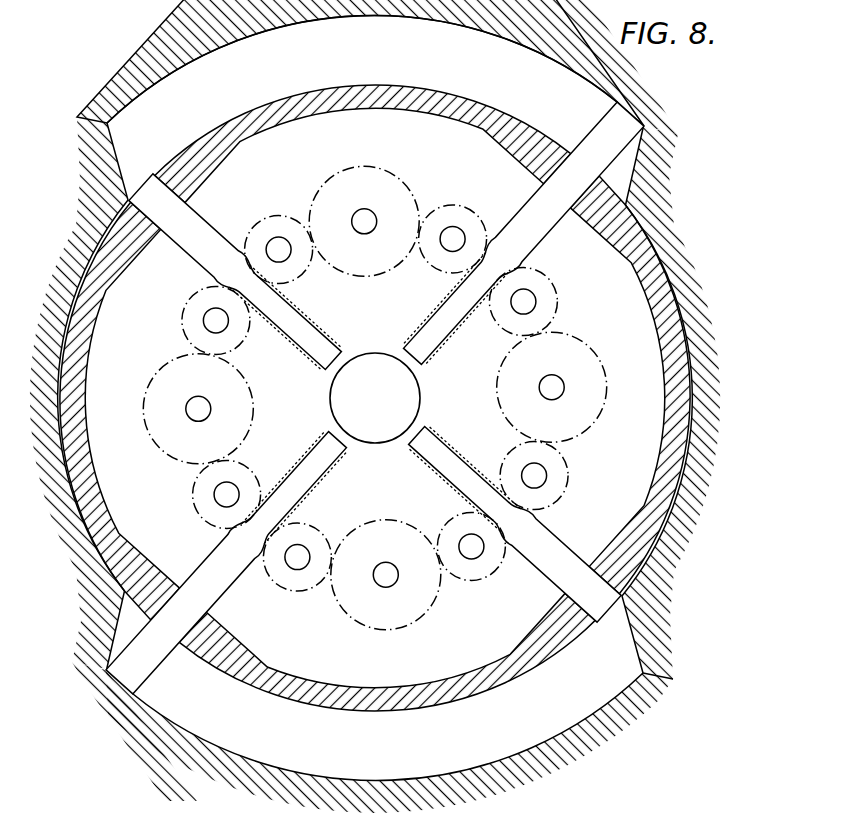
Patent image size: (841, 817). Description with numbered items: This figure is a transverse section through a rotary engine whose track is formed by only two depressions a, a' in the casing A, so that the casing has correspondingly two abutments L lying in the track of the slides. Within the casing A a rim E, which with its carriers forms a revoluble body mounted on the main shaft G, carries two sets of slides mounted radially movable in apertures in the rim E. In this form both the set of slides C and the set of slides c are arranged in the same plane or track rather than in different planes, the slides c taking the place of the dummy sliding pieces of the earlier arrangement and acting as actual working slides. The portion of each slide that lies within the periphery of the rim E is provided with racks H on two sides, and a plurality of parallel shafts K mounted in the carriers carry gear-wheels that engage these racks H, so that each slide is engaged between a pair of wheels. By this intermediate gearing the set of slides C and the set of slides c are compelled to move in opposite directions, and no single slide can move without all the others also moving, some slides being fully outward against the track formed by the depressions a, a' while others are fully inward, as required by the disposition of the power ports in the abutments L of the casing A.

The casing A is at (150, 55).
The depression a is at (362, 69).
The depression a' is at (388, 726).
The rim E is at (436, 93).
The slide C is at (593, 133).
The slide c is at (202, 237).
The rack H is at (307, 326).
The shaft K is at (366, 219).
The main shaft G is at (412, 381).
The abutment L is at (374, 400).